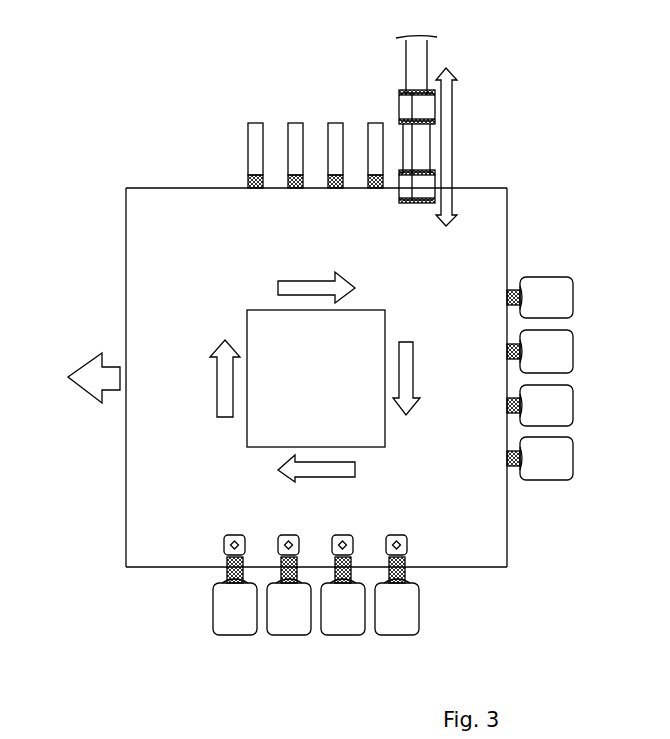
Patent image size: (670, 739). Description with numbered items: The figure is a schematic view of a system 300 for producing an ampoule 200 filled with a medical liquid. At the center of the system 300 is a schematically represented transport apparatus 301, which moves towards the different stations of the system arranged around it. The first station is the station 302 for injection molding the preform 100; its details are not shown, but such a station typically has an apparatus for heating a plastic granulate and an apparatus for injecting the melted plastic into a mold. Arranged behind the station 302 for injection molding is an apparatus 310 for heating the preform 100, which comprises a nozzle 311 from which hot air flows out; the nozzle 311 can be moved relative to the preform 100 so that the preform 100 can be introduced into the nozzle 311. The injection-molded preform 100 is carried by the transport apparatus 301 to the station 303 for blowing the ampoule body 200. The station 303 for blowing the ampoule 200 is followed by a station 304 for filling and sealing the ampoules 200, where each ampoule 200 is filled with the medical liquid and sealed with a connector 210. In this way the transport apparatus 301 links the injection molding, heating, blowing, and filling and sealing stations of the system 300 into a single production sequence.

The preform 100 is at (292, 135).
The ampoule 200 is at (548, 405).
The connector 210 is at (227, 562).
The system 300 is at (157, 631).
The transport apparatus 301 is at (290, 347).
The station for injection molding 302 is at (230, 156).
The station for blowing 303 is at (582, 262).
The station for filling and sealing 304 is at (438, 627).
The apparatus for heating 310 is at (472, 75).
The nozzle 311 is at (420, 132).